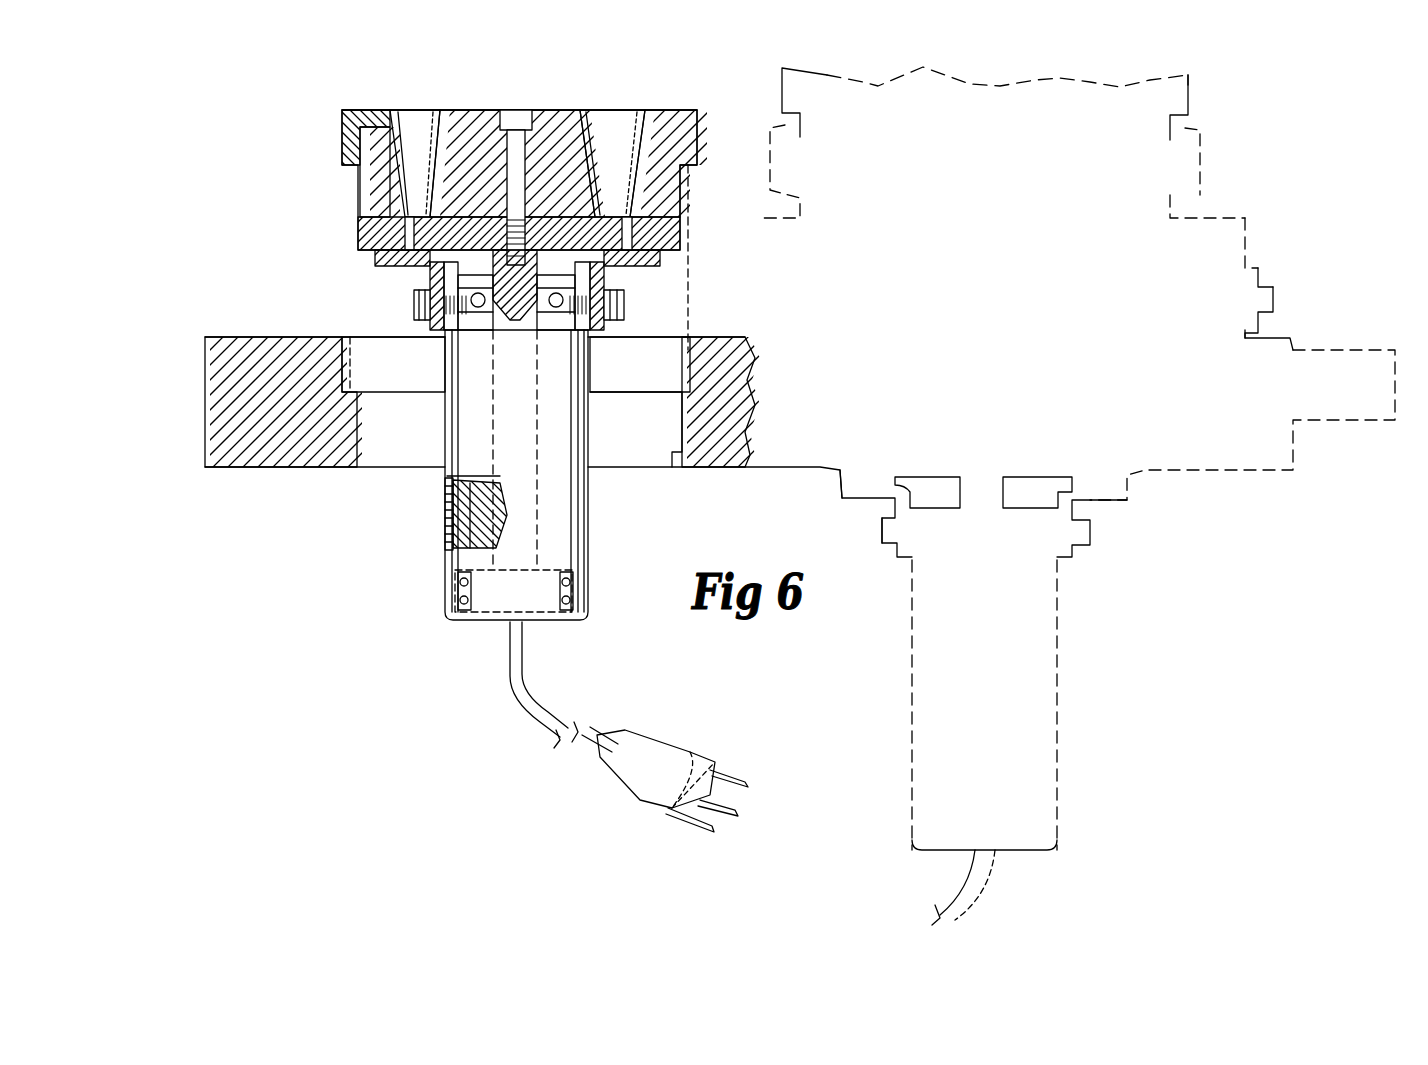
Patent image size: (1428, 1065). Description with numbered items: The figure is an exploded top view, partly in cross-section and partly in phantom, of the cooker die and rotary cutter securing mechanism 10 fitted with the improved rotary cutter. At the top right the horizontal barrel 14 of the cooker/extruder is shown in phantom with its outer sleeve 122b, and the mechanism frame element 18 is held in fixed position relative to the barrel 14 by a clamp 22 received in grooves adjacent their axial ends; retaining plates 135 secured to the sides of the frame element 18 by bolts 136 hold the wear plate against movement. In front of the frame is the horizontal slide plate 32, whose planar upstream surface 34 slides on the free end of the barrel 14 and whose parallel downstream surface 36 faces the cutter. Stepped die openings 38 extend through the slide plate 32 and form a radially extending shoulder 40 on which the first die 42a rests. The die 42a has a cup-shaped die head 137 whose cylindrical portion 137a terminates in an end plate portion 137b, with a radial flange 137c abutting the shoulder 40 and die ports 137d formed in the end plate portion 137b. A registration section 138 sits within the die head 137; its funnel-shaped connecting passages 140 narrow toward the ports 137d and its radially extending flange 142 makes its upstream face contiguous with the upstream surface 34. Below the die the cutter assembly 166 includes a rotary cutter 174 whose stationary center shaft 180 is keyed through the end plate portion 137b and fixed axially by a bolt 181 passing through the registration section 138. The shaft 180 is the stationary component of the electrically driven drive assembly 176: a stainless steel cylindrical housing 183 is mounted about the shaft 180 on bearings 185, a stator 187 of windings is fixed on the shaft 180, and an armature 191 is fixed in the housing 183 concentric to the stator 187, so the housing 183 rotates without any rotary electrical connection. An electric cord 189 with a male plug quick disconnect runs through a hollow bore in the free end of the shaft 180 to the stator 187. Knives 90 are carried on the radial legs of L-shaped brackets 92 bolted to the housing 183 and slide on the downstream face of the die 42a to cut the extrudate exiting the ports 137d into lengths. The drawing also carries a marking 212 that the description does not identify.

The mechanism 10 is at (1328, 150).
The barrel 14 is at (1190, 93).
The mechanism frame element 18 is at (1248, 222).
The clamp 22 is at (1202, 160).
The slide plate 32 is at (205, 335).
The upstream surface 34 is at (245, 336).
The downstream surface 36 is at (215, 468).
The die openings 38 is at (655, 445).
The shoulder 40 is at (680, 390).
The first die 42a is at (686, 110).
The knives 90 is at (380, 256).
The L-shaped brackets 92 is at (380, 262).
The outer sleeve 122b is at (1190, 110).
The retaining plates 135 is at (1268, 272).
The bolts 136 is at (1276, 293).
The die head 137 is at (714, 350).
The cylindrical portion 137a is at (348, 172).
The end plate portion 137b is at (608, 280).
The radial flange 137c is at (342, 152).
The die ports 137d is at (410, 225).
The registration section 138 is at (548, 118).
The connecting passages 140 is at (420, 125).
The radially extending flange 142 is at (375, 108).
The cutter assembly 166 is at (425, 312).
The rotary cutter 174 is at (442, 520).
The drive assembly 176 is at (598, 598).
The center shaft 180 is at (540, 520).
The bolt 181 is at (516, 118).
The cylindrical housing 183 is at (588, 562).
The bearings 185 is at (470, 332).
The stator 187 is at (478, 548).
The electric cord 189 is at (585, 750).
The armature 191 is at (447, 478).
The direction of movement 212 is at (1200, 77).